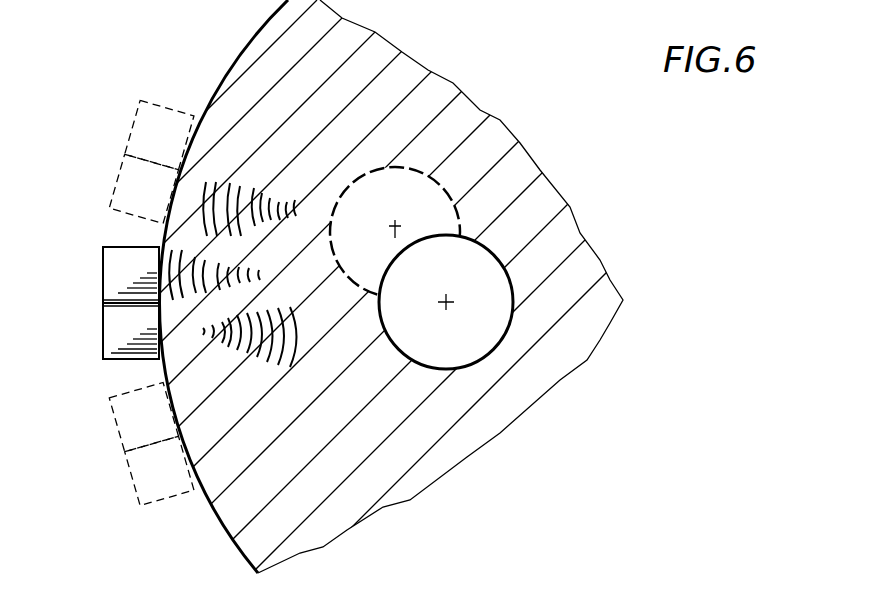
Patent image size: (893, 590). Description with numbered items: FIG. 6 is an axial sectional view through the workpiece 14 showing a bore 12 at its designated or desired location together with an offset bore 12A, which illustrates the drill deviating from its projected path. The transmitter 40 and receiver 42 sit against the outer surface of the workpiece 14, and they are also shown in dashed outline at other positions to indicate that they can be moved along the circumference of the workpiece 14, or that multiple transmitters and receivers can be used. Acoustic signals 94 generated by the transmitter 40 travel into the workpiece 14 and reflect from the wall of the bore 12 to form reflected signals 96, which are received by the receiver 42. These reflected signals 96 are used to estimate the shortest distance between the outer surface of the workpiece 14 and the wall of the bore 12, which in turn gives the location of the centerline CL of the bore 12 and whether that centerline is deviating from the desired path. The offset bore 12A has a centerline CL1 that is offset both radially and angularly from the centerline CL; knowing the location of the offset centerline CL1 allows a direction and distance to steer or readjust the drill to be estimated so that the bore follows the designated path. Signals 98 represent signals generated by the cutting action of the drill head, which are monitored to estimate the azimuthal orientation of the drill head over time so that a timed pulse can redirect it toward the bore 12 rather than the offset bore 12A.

The bore 12 is at (512, 268).
The offset bore 12A is at (453, 200).
The workpiece 14 is at (450, 437).
The transmitter 40 is at (125, 184).
The receiver 42 is at (138, 130).
The acoustic signals 94 is at (280, 370).
The reflected signals 96 is at (272, 273).
The signals 98 is at (265, 185).
The centerline CL is at (450, 307).
The offset centerline CL1 is at (394, 222).